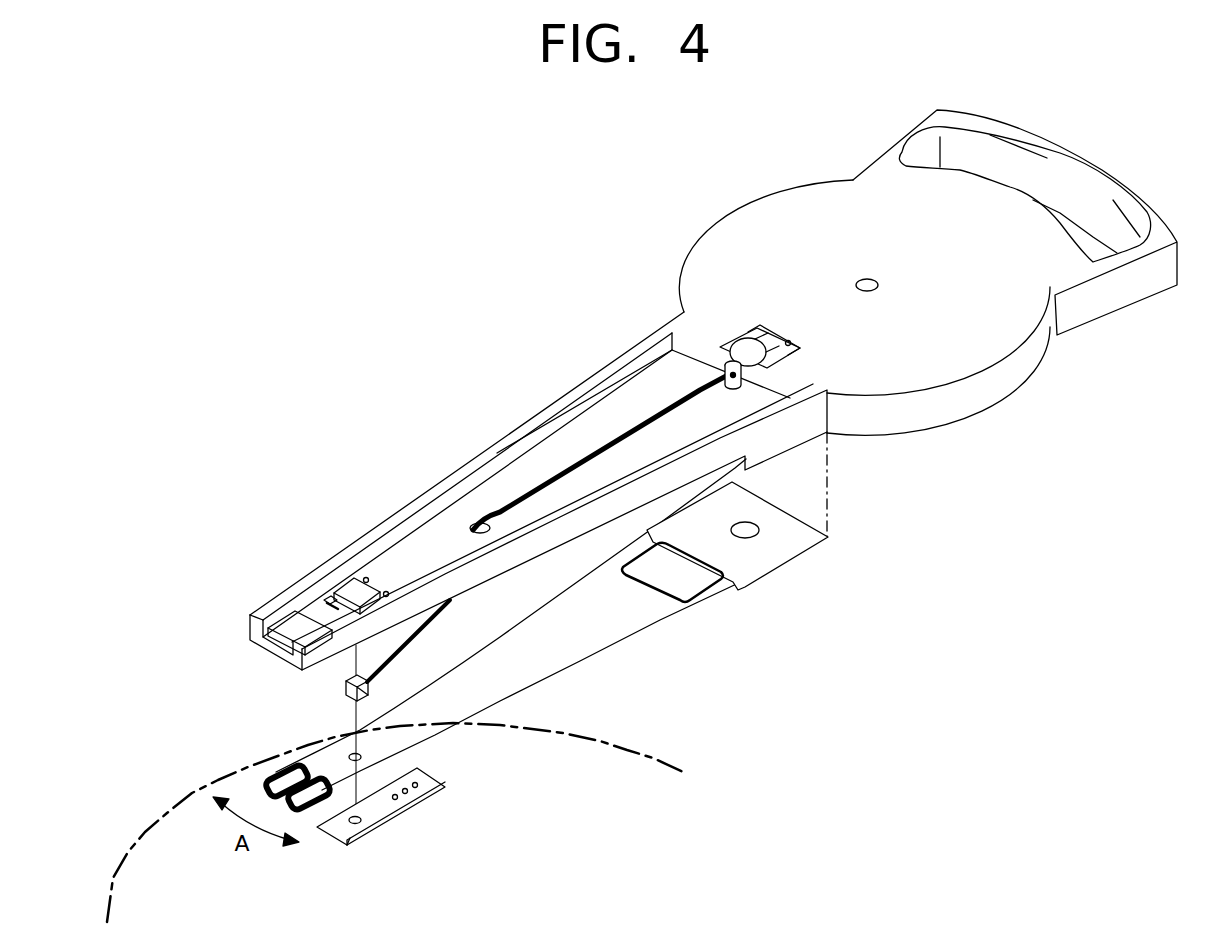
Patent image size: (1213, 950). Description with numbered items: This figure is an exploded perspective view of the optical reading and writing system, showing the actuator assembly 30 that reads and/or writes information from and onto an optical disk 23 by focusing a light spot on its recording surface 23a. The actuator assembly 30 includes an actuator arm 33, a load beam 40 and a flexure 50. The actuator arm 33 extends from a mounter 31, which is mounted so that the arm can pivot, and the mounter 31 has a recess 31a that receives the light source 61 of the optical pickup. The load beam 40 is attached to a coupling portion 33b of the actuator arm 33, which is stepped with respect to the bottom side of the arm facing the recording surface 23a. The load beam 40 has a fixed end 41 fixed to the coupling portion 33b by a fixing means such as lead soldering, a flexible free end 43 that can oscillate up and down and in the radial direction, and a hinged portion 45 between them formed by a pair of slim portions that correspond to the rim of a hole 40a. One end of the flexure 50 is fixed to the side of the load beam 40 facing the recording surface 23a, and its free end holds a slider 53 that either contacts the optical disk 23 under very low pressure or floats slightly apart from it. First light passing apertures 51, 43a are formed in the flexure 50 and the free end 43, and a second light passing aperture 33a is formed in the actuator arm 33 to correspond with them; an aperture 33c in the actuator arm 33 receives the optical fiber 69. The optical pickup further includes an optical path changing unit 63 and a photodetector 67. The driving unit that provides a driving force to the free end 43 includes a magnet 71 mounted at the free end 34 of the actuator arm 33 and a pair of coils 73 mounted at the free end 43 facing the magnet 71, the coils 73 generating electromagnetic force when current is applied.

The actuator assembly 30 is at (881, 272).
The mounter 31 is at (864, 307).
The recess 31a is at (790, 343).
The actuator arm 33 is at (536, 480).
The second light passing aperture 33a is at (330, 597).
The coupling portion 33b is at (795, 440).
The aperture 33c is at (480, 524).
The free end of the actuator arm 34 is at (250, 617).
The load beam 40 is at (791, 606).
The hole 40a is at (679, 565).
The fixed end 41 is at (777, 543).
The free end 43 is at (511, 624).
The first light passing aperture 43a is at (353, 757).
The hinged portion 45 is at (710, 578).
The flexure 50 is at (418, 848).
The first light passing aperture 51 is at (373, 813).
The slider 53 is at (357, 840).
The light source 61 is at (745, 340).
The optical path changing unit 63 is at (343, 692).
The photodetector 67 is at (366, 577).
The optical fiber 69 is at (587, 457).
The magnet 71 is at (292, 622).
The coils 73 is at (293, 773).
The optical disk 23 is at (357, 822).
The recording surface 23a is at (163, 842).